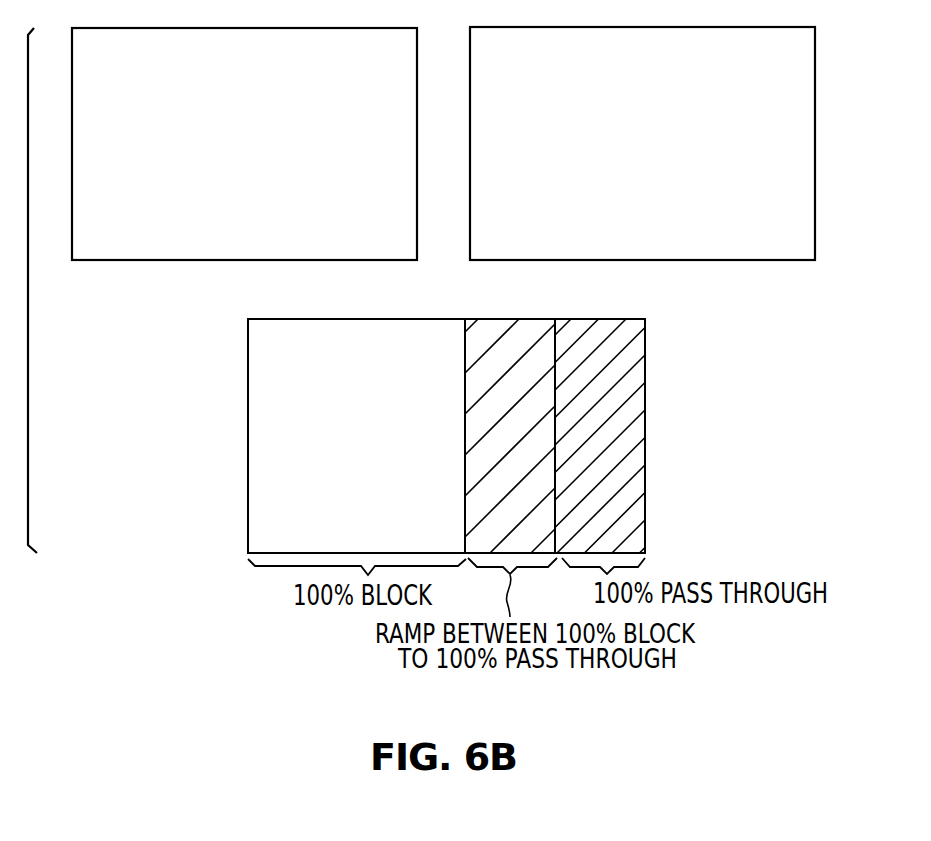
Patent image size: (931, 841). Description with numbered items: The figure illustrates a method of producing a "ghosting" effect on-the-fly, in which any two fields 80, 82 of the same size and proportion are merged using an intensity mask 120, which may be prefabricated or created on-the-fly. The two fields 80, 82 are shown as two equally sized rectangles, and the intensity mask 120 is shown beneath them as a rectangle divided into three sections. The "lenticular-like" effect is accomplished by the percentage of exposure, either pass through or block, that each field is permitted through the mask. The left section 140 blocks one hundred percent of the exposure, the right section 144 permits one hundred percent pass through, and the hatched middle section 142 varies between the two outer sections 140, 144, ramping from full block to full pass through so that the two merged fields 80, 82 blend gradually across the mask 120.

The field 80 is at (182, 272).
The field 82 is at (744, 273).
The intensity mask 120 is at (228, 442).
The section 140 is at (390, 446).
The section 142 is at (530, 445).
The section 144 is at (620, 445).